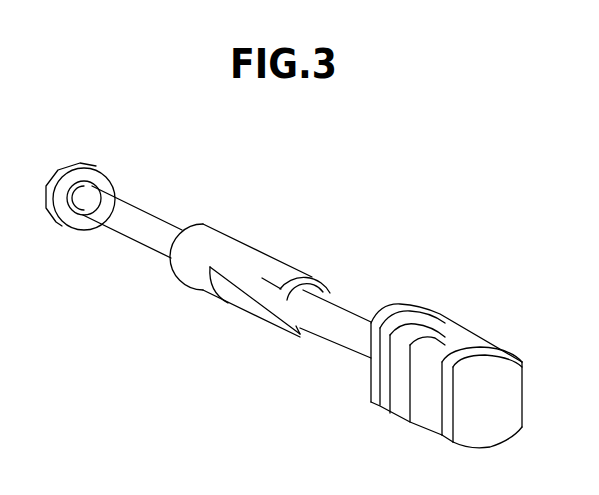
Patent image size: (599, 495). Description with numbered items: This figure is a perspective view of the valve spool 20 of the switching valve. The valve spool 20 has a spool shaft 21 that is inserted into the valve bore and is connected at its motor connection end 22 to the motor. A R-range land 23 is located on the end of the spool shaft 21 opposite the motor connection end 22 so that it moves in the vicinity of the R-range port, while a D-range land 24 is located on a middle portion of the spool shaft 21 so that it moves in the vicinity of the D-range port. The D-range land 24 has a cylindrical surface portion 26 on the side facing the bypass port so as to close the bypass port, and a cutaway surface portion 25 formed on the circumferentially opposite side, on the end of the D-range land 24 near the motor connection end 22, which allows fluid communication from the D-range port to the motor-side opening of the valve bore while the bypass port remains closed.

The valve spool 20 is at (273, 232).
The spool shaft 21 is at (128, 232).
The motor connection end 22 is at (441, 320).
The R-range land 23 is at (80, 163).
The D-range land 24 is at (231, 232).
The cutaway surface portion 25 is at (255, 303).
The cylindrical surface portion 26 is at (287, 270).